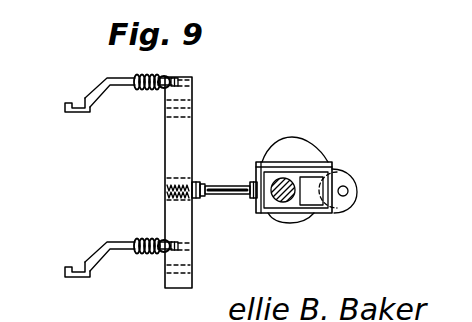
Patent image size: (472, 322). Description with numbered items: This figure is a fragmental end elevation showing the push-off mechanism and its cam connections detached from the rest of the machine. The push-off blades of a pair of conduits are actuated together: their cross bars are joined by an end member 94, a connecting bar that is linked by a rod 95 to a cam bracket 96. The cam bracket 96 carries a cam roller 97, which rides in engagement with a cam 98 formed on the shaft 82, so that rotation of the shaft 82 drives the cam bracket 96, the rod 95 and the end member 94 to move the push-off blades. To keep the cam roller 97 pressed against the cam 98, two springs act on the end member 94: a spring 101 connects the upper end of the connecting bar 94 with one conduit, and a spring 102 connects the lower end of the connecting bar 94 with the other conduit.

The shaft 82 is at (279, 198).
The end member 94 is at (165, 145).
The rod 95 is at (220, 183).
The cam bracket 96 is at (332, 164).
The cam roller 97 is at (353, 207).
The cam 98 is at (286, 221).
The spring 101 is at (139, 88).
The spring 102 is at (147, 238).